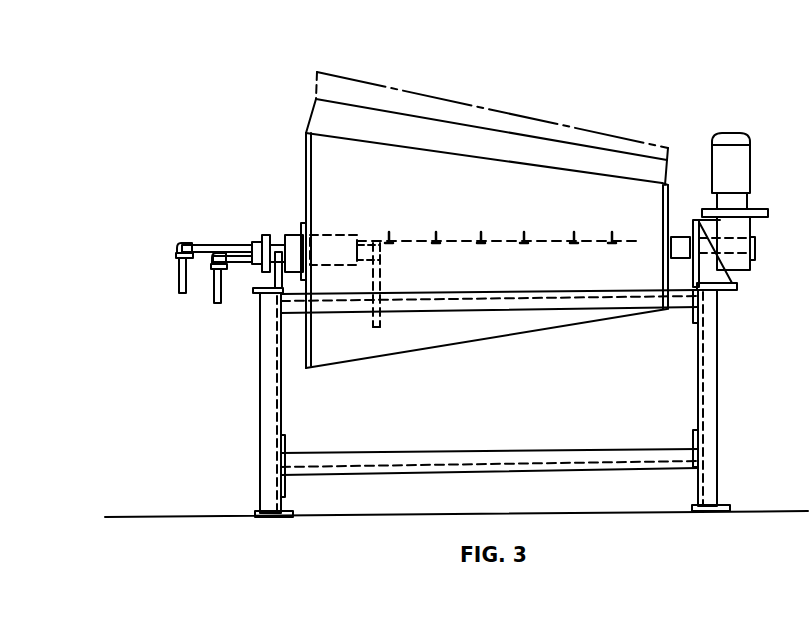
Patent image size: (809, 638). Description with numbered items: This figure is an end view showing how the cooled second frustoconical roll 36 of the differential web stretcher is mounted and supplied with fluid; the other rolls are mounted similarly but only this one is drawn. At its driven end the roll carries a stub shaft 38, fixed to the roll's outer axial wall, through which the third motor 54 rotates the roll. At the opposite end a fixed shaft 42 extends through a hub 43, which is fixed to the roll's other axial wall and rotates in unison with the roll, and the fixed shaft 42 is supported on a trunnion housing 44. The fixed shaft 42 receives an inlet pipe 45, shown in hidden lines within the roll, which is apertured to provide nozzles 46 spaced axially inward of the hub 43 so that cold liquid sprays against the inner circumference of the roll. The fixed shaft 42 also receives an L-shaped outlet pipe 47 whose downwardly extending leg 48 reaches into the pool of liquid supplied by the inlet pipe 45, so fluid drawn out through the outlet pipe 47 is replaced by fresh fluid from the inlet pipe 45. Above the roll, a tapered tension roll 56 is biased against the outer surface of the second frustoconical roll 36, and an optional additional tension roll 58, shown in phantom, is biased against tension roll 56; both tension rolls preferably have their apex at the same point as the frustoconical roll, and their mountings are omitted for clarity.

The second frustoconical roll 36 is at (460, 333).
The stub shaft 38 is at (695, 220).
The fixed shaft 42 is at (257, 242).
The hub 43 is at (293, 233).
The trunnion housing 44 is at (260, 269).
The inlet pipe 45 is at (459, 238).
The nozzles 46 is at (390, 233).
The L-shaped outlet pipe 47 is at (362, 270).
The downwardly extending leg 48 is at (383, 277).
The third motor 54 is at (742, 177).
The tapered tension roll 56 is at (613, 152).
The optional additional tension roll 58 is at (502, 108).